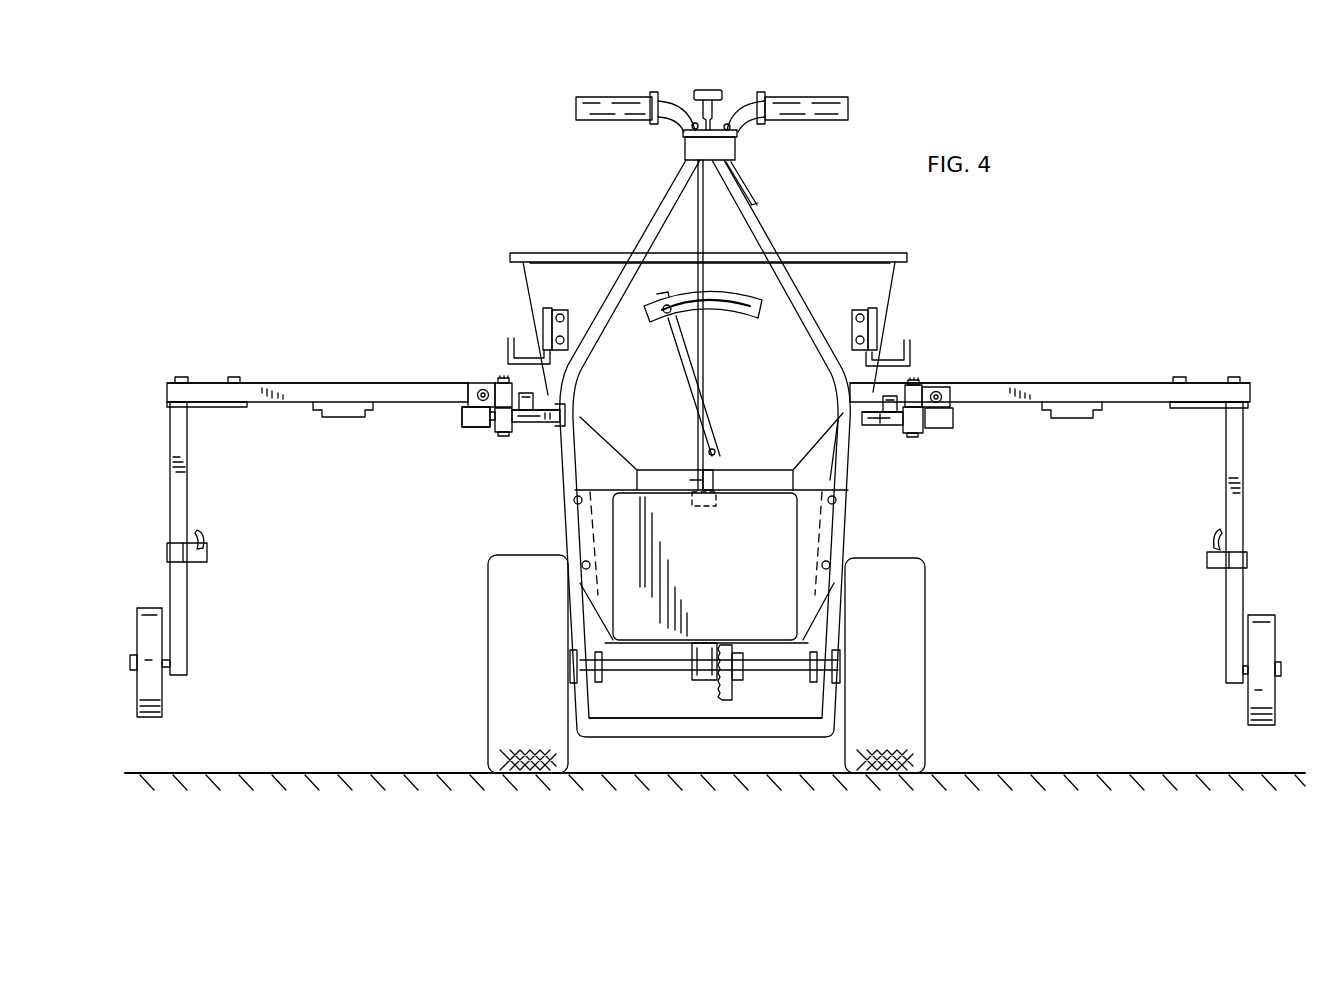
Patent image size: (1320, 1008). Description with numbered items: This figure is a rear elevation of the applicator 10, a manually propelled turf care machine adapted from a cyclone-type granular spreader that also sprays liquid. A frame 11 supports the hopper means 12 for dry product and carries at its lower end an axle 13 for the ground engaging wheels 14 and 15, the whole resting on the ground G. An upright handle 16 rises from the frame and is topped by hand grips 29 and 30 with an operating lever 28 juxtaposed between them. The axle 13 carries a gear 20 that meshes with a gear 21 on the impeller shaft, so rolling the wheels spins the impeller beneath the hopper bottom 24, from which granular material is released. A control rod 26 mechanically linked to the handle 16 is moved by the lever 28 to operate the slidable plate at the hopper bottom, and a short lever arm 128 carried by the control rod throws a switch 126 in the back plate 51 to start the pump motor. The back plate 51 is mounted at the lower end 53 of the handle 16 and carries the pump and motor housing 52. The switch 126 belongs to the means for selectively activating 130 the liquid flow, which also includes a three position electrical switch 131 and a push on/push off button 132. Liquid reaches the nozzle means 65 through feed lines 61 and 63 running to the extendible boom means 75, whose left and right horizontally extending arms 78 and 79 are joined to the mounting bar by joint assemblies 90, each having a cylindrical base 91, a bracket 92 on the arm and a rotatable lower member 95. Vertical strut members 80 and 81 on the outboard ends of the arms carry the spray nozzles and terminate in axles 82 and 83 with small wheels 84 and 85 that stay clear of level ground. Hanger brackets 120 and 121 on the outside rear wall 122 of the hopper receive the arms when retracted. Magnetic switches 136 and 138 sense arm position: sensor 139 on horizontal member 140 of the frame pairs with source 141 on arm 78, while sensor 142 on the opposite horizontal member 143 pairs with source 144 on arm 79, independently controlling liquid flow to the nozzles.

The applicator 10 is at (1030, 254).
The frame 11 is at (895, 430).
The hopper means 12 is at (864, 254).
The axle 13 is at (617, 672).
The ground engaging wheel 14 is at (912, 690).
The ground engaging wheel 15 is at (495, 682).
The upright handle 16 is at (774, 245).
The gear 20 is at (722, 700).
The gear 21 is at (693, 660).
The hopper bottom 24 is at (752, 477).
The control rod 26 is at (705, 357).
The operating lever 28 is at (703, 88).
The hand grip 29 is at (828, 114).
The hand grip 30 is at (600, 114).
The back plate 51 is at (815, 524).
The pump and motor housing 52 is at (783, 593).
The lower end of handle 53 is at (842, 483).
The feed line 61 is at (1214, 540).
The feed line 63 is at (204, 531).
The nozzle means 65 is at (221, 552).
The extendible boom means 75 is at (393, 381).
The left horizontally extending arm 78 is at (1028, 388).
The right horizontally extending arm 79 is at (300, 383).
The vertical strut member 80 is at (1233, 453).
The vertical strut member 81 is at (184, 454).
The axle 82 is at (1243, 673).
The axle 83 is at (170, 663).
The wheel 84 is at (1263, 625).
The wheel 85 is at (158, 716).
The joint assembly 90 is at (485, 376).
The cylindrical base 91 is at (497, 434).
The bracket 92 is at (474, 388).
The lower member 95 is at (462, 428).
The hanger bracket 120 is at (910, 346).
The hanger bracket 121 is at (505, 350).
The outside rear wall 122 is at (827, 272).
The switch 126 is at (694, 507).
The short lever arm 128 is at (720, 482).
The means for selectively activating 130 is at (686, 152).
The three position electrical switch 131 is at (688, 128).
The push on/push off button 132 is at (738, 128).
The magnetic switch 136 is at (878, 393).
The magnetic switch 138 is at (516, 431).
The sensor 139 is at (898, 386).
The horizontal member 140 is at (880, 434).
The source 141 is at (1072, 420).
The sensor 142 is at (526, 392).
The horizontal member 143 is at (524, 422).
The source 144 is at (333, 412).
The ground G is at (252, 772).